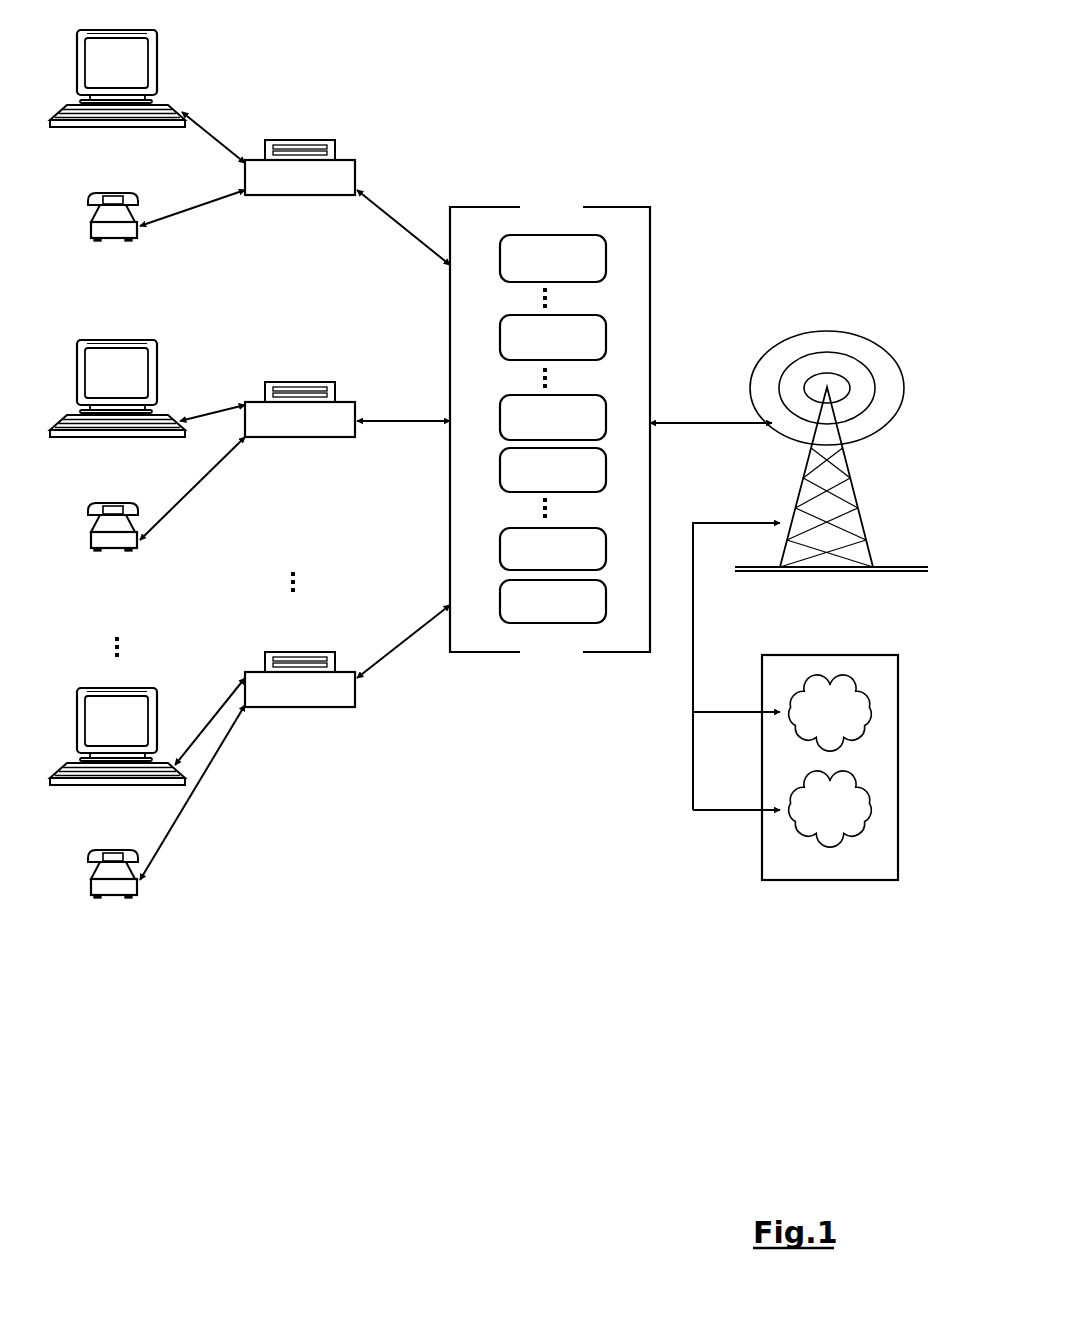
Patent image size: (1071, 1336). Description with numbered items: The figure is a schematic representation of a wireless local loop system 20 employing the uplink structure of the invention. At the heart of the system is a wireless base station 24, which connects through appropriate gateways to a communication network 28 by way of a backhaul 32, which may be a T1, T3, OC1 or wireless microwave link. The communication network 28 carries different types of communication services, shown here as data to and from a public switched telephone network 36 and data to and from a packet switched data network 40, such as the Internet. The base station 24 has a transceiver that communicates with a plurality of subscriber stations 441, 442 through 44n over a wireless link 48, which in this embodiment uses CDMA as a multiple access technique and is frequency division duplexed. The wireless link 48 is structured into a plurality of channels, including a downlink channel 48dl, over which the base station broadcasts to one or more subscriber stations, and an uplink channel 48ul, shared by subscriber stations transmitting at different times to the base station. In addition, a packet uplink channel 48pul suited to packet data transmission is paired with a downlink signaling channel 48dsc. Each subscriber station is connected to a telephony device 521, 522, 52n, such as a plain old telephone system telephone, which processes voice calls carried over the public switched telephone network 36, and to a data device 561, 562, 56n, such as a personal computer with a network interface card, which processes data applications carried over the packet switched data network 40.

The wireless local loop system 20 is at (590, 926).
The wireless base station 24 is at (831, 451).
The communication network 28 is at (830, 901).
The backhaul 32 is at (736, 666).
The public switched telephone network (PSTN) 36 is at (830, 713).
The packet switched data network 40 is at (830, 809).
The subscriber station 441 is at (300, 167).
The subscriber station 442 is at (300, 409).
The subscriber station 44n is at (300, 679).
The wireless link 48 is at (456, 496).
The downlink channel 48dl is at (553, 258).
The uplink channel 48ul is at (553, 337).
The packet uplink channel 48pul is at (553, 482).
The downlink signaling channel 48dsc is at (553, 535).
The telephony device 521 is at (113, 241).
The telephony device 522 is at (113, 552).
The telephony device 52n is at (113, 899).
The data device 561 is at (117, 94).
The data device 562 is at (117, 405).
The data device 56n is at (117, 753).